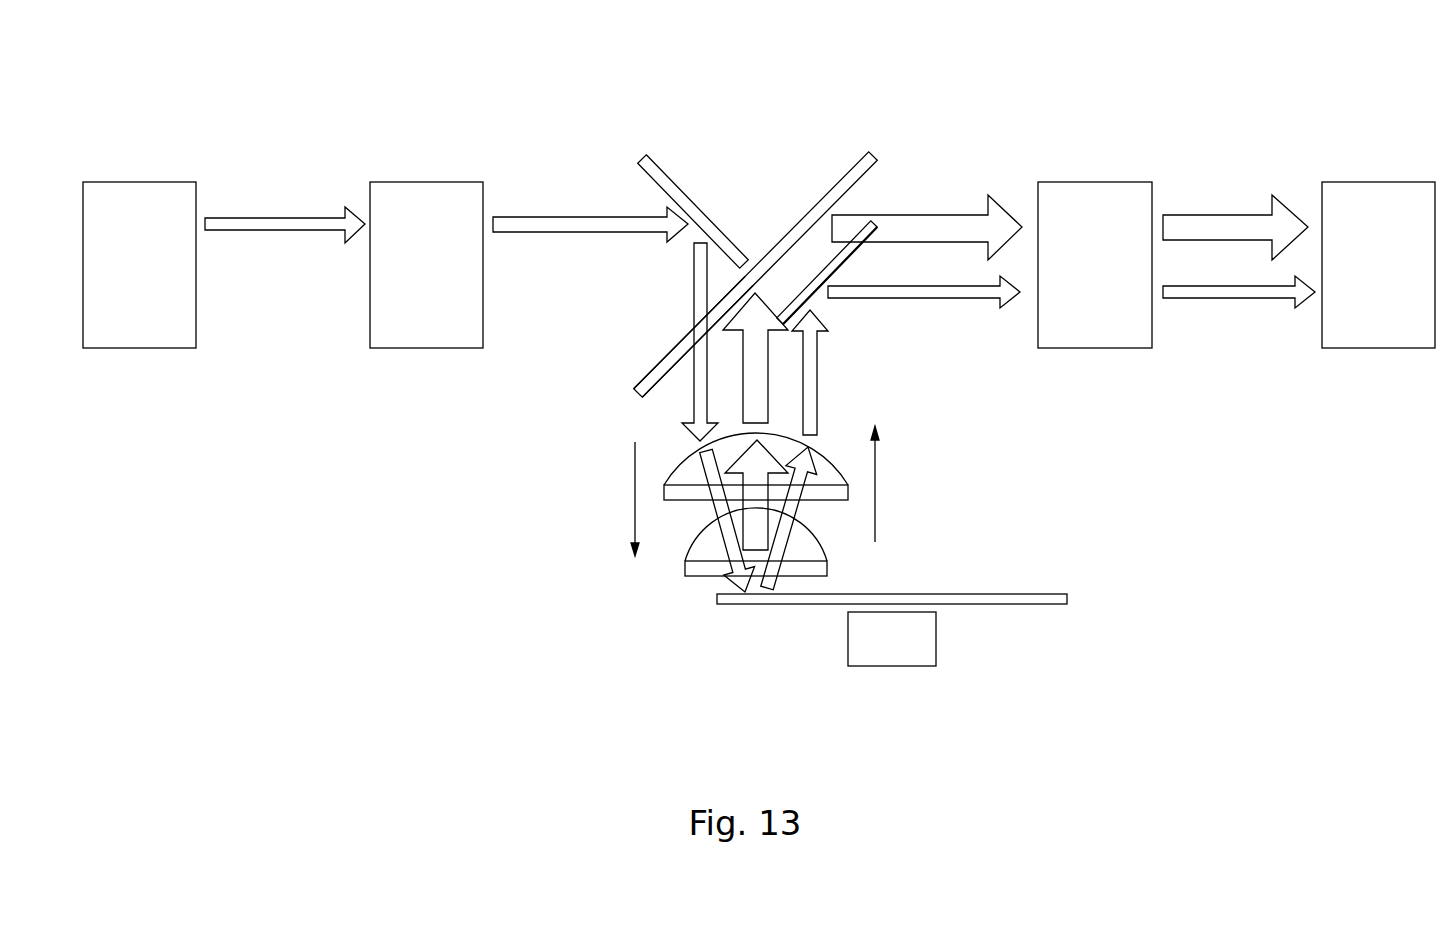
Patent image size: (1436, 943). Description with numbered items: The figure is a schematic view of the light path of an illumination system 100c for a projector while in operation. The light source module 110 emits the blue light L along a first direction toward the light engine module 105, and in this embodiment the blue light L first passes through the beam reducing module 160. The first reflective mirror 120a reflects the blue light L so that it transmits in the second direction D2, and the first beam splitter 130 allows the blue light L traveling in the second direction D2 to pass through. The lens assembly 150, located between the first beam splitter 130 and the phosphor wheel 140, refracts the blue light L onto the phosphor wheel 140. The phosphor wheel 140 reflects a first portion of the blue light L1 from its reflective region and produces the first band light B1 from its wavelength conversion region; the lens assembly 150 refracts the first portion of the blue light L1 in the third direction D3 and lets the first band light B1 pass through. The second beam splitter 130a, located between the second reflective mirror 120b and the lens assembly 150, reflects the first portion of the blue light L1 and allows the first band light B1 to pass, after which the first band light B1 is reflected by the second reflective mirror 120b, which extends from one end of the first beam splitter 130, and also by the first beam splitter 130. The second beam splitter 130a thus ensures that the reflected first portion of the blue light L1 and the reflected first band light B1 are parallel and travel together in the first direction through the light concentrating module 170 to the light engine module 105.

The illumination system for a projector 100c is at (127, 73).
The light source module 110 is at (115, 280).
The beam reducing module 160 is at (402, 280).
The light concentrating module 170 is at (1072, 280).
The light engine module 105 is at (1355, 280).
The first reflective mirror 120a is at (678, 187).
The second reflective mirror 120b is at (817, 205).
The first beam splitter 130 is at (648, 377).
The second beam splitter 130a is at (887, 220).
The phosphor wheel 140 is at (1055, 593).
The lens assembly 150 is at (660, 598).
The blue light L is at (285, 211).
The first band light B1 is at (927, 219).
The first portion of the blue light L1 is at (924, 309).
The second direction D2 is at (614, 499).
The third direction D3 is at (898, 484).